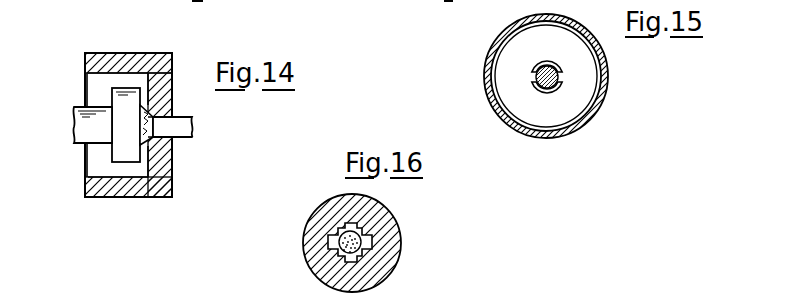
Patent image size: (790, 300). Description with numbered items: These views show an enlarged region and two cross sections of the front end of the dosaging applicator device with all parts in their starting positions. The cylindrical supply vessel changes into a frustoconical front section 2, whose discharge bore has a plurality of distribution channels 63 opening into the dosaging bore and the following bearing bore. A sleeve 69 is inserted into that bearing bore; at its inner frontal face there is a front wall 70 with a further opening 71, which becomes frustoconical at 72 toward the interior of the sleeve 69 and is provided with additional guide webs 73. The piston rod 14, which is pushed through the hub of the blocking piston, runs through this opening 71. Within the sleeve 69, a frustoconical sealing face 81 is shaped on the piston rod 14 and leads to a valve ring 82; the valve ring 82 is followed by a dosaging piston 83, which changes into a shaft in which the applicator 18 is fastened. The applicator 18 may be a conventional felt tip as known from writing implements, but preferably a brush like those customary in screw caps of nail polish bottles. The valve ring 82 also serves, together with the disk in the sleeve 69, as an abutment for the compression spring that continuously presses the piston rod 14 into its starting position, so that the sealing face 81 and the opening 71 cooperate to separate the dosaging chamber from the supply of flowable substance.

In FIG. 14, the sleeve 69 is at (123, 187).
In FIG. 14, the front wall 70 is at (158, 178).
In FIG. 14, the further opening 71 is at (172, 148).
In FIG. 15, the further opening 71 is at (552, 93).
In FIG. 14, the frustoconical portion of the further opening 72 is at (157, 140).
In FIG. 14, the frustoconical sealing face 81 is at (146, 108).
In FIG. 14, the valve ring 82 is at (123, 143).
In FIG. 14, the dosaging piston 83 is at (87, 130).
In FIG. 15, the guide webs 73 is at (532, 75).
In FIG. 15, the piston rod 14 is at (562, 73).
In FIG. 16, the frustoconical front section 2 is at (380, 240).
In FIG. 16, the applicator 18 is at (380, 268).
In FIG. 16, the distribution channels 63 is at (348, 224).